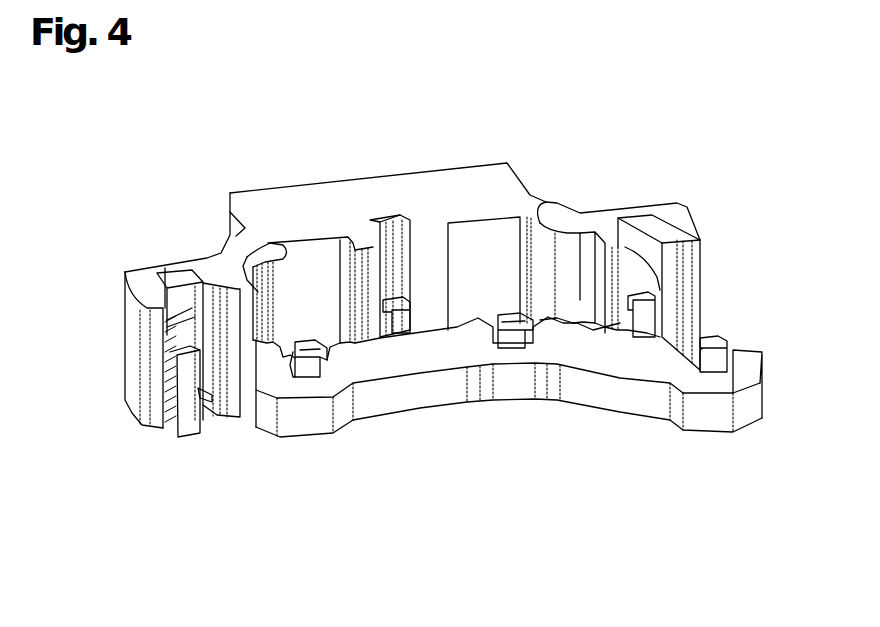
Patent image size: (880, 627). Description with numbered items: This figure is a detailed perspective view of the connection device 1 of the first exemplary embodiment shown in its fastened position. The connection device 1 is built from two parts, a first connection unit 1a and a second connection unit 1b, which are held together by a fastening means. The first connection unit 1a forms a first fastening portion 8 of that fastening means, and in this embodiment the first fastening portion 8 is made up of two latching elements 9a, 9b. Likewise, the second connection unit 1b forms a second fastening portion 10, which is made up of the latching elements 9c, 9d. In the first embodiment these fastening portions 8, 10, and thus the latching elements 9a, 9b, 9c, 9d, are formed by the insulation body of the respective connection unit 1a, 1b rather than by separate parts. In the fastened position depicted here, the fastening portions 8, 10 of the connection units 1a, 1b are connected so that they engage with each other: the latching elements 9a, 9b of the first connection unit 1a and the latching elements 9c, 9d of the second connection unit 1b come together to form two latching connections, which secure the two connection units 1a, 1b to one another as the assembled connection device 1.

The connection device 1 is at (706, 85).
The first connection unit 1a is at (413, 397).
The second connection unit 1b is at (457, 167).
The first fastening portion 8 is at (427, 247).
The latching element 9a is at (588, 318).
The latching element 9b is at (267, 343).
The latching element 9c is at (563, 225).
The latching element 9d is at (270, 262).
The second fastening portion 10 is at (434, 193).